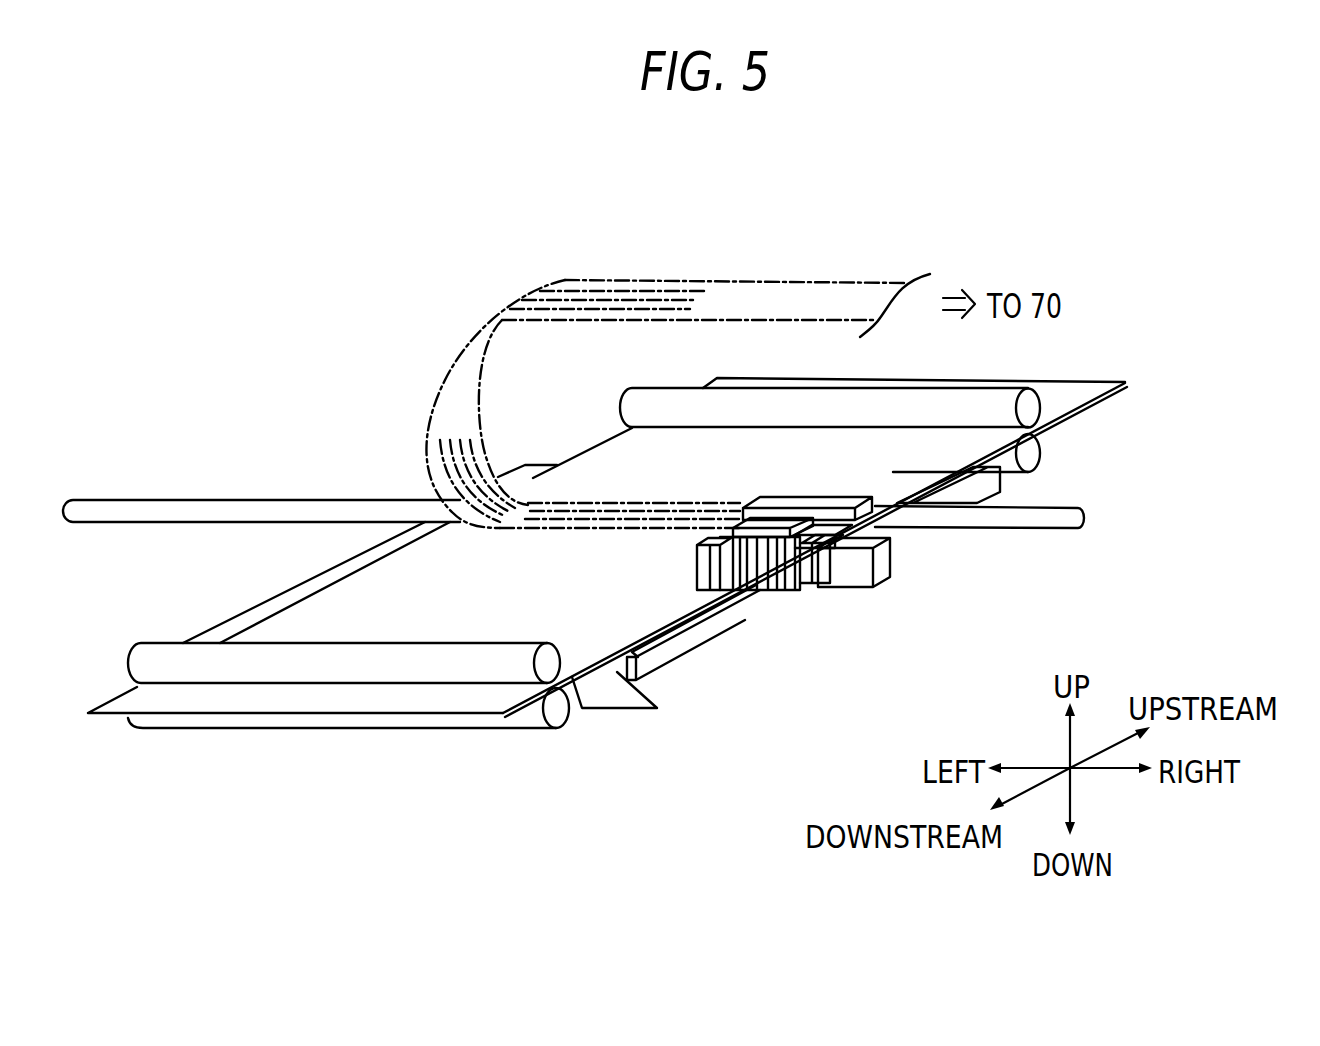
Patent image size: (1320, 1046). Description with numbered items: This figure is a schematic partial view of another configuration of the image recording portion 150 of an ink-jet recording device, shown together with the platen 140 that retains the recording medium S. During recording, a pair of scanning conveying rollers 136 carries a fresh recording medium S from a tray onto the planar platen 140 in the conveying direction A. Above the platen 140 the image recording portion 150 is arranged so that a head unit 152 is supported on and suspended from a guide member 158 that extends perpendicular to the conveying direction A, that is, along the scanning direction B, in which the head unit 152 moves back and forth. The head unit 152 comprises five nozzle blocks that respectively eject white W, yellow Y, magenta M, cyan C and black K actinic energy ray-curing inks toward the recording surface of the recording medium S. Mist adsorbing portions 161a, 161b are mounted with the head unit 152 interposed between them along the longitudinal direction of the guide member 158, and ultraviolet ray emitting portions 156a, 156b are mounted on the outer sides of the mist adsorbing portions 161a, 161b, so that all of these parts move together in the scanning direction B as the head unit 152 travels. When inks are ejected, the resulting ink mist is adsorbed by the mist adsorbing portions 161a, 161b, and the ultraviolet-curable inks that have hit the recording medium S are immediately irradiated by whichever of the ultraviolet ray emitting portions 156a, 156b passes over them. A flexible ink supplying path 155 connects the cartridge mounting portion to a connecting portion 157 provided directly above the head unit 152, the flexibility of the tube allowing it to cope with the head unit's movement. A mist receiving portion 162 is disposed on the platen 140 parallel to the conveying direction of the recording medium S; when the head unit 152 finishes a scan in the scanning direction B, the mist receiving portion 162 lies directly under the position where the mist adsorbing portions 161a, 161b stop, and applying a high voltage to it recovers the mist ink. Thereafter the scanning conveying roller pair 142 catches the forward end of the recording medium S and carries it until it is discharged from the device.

The image recording portion 150 is at (411, 284).
The ink supplying path 155 is at (640, 280).
The guide member 158 is at (310, 500).
The recording medium S is at (582, 463).
The scanning conveying rollers 136 is at (1038, 403).
The scanning conveying roller pair 142 is at (553, 663).
The head unit 152 is at (830, 483).
The connecting portion 157 is at (768, 516).
The mist adsorbing portion 161a is at (710, 553).
The ultraviolet ray emitting portion 156a is at (710, 578).
The mist adsorbing portion 161b is at (795, 557).
The ultraviolet ray emitting portion 156b is at (790, 575).
The platen 140 is at (663, 687).
The mist receiving portion 162 is at (693, 672).
The white ink W is at (737, 592).
The yellow ink Y is at (750, 592).
The magenta ink M is at (767, 592).
The cyan ink C is at (783, 592).
The black ink K is at (797, 592).
The conveying direction A is at (496, 592).
The scanning direction B is at (571, 573).